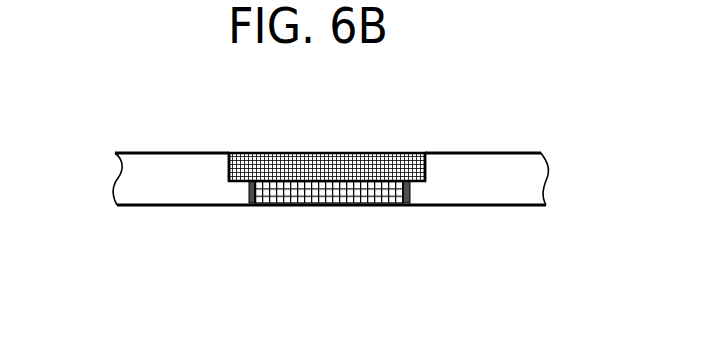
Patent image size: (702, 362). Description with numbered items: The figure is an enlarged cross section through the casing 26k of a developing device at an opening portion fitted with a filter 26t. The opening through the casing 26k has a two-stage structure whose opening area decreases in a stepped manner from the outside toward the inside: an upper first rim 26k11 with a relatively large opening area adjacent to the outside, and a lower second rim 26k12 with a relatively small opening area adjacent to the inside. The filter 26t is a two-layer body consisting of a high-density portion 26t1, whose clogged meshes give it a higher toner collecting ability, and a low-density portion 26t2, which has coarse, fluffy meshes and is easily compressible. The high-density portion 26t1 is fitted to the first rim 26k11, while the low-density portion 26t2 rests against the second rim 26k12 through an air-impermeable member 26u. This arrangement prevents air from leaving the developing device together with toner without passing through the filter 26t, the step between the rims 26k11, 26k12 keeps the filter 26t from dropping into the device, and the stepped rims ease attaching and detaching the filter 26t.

The casing of the developing device 26k is at (126, 149).
The first rim 26k11 is at (232, 170).
The filter 26t is at (327, 170).
The high-density portion 26t1 is at (360, 165).
The low-density portion 26t2 is at (322, 206).
The air-impermeable member 26u is at (329, 257).
The second rim 26k12 is at (254, 196).